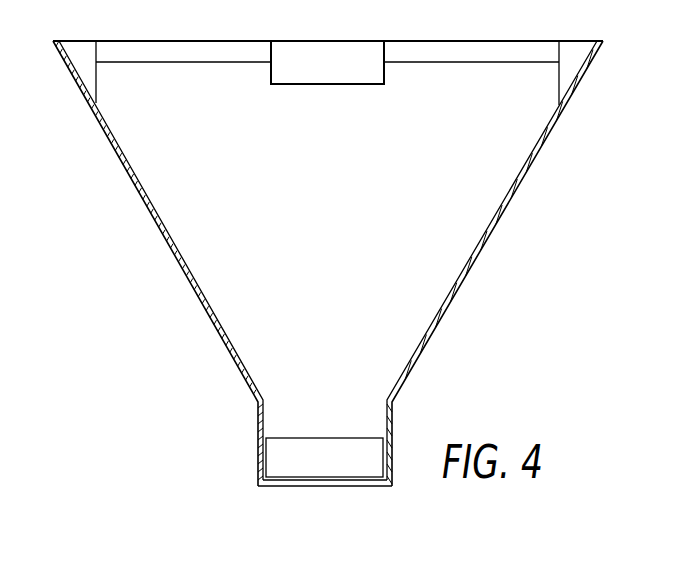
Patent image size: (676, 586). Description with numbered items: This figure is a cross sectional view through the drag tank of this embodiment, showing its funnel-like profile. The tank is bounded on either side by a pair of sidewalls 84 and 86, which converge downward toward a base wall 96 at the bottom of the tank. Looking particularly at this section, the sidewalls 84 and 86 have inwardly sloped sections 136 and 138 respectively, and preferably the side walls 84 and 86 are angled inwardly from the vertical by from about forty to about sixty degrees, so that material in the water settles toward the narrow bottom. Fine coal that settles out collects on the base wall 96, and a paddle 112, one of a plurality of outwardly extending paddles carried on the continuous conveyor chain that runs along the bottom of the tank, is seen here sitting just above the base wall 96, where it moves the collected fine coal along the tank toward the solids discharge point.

The sidewall 84 is at (146, 227).
The sidewall 86 is at (519, 212).
The base wall 96 is at (330, 487).
The paddle 112 is at (300, 449).
The inwardly sloped section 136 is at (199, 284).
The inwardly sloped section 138 is at (474, 252).